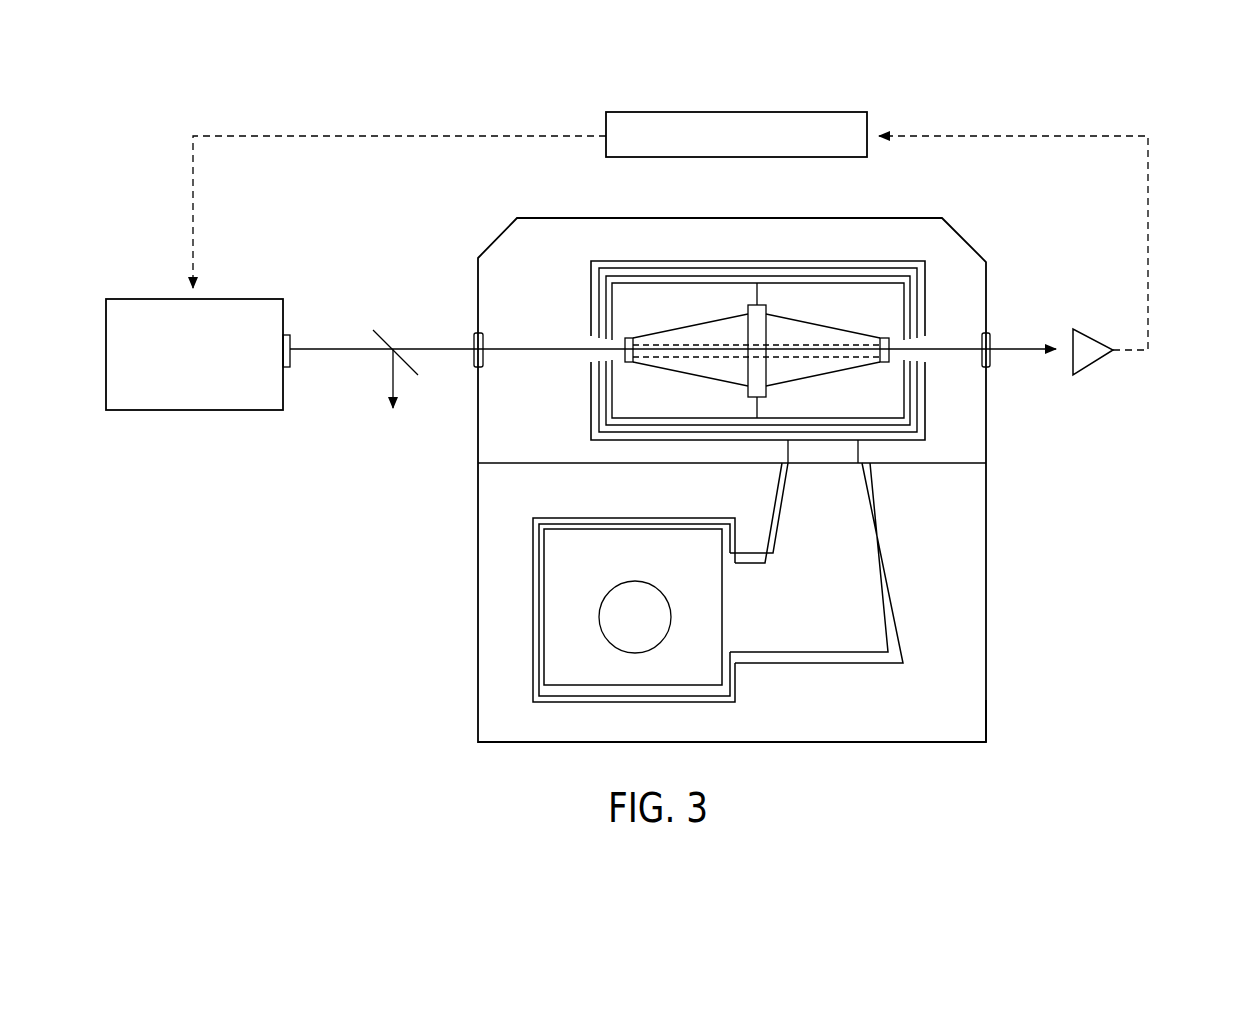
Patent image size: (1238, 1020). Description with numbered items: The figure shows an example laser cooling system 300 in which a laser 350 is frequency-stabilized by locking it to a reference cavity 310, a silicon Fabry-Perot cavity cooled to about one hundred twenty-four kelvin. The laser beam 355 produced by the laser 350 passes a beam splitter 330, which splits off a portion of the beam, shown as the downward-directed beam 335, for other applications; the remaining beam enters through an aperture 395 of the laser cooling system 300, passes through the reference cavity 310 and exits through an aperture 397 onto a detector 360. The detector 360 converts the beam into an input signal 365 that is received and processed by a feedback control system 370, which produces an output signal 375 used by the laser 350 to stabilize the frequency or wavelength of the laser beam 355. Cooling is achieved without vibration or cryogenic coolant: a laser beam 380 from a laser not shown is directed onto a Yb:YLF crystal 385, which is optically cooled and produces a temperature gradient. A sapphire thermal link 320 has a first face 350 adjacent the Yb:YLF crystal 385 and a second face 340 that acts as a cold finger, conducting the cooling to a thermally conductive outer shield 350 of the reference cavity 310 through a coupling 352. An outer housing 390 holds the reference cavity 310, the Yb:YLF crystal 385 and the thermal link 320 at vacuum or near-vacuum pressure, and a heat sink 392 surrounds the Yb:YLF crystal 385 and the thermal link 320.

The laser cooling system 300 is at (131, 127).
The reference cavity 310 is at (895, 313).
The thermal link 320 is at (904, 604).
The beam splitter 330 is at (450, 348).
The split-off beam 335 is at (392, 392).
The second face or surface of thermal coupling 340 is at (821, 478).
The laser 350 is at (932, 246).
The coupling 352 is at (872, 452).
The laser beam 355 is at (352, 348).
The detector 360 is at (1092, 366).
The input signal 365 is at (1150, 191).
The feedback control system 370 is at (735, 112).
The output signal 375 is at (372, 133).
The laser beam 380 is at (648, 629).
The Yb:YLF crystal 385 is at (716, 558).
The outer housing 390 is at (474, 586).
The heat sink 392 is at (996, 626).
The aperture 395 is at (488, 342).
The aperture 397 is at (972, 340).